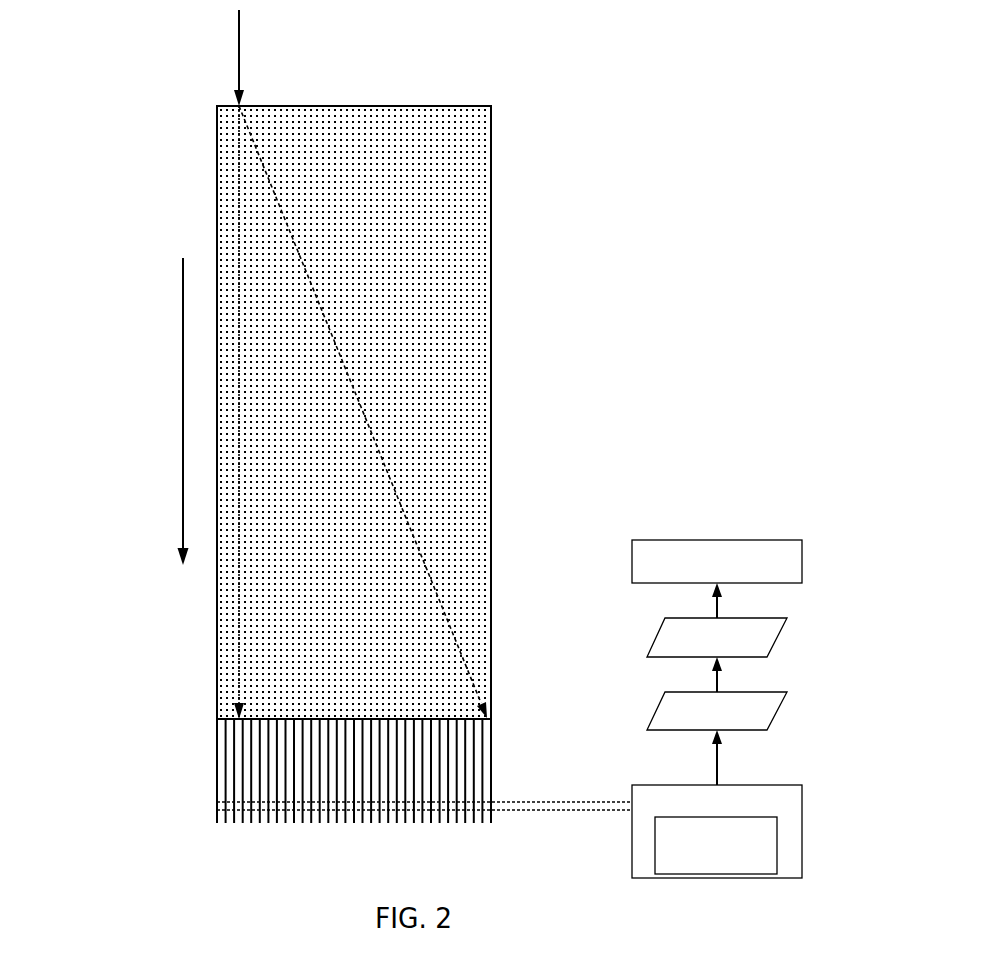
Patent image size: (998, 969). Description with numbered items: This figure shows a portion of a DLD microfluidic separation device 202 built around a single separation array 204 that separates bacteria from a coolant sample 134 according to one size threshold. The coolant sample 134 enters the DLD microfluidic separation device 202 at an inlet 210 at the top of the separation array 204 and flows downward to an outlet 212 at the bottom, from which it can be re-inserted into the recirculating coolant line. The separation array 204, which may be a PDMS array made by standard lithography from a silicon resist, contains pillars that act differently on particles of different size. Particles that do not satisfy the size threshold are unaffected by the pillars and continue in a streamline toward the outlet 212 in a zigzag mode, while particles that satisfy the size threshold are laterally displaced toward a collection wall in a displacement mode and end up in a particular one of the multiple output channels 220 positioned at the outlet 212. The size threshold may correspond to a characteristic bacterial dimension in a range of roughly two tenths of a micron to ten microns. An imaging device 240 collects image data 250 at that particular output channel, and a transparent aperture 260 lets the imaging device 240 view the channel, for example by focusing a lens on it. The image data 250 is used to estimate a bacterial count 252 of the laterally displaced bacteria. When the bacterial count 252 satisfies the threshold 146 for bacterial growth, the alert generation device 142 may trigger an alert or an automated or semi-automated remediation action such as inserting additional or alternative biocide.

The DLD microfluidic separation device 202 is at (893, 72).
The coolant sample 134 is at (336, 58).
The inlet 210 is at (192, 105).
The outlet 212 is at (192, 720).
The separation array 204 is at (465, 412).
The output channels 220 is at (354, 792).
The transparent aperture 260 is at (498, 792).
The alert generation device 142 is at (717, 579).
The bacterial count 252 is at (717, 655).
The image data 250 is at (717, 738).
The imaging device 240 is at (717, 831).
The threshold for bacterial growth 146 is at (716, 845).